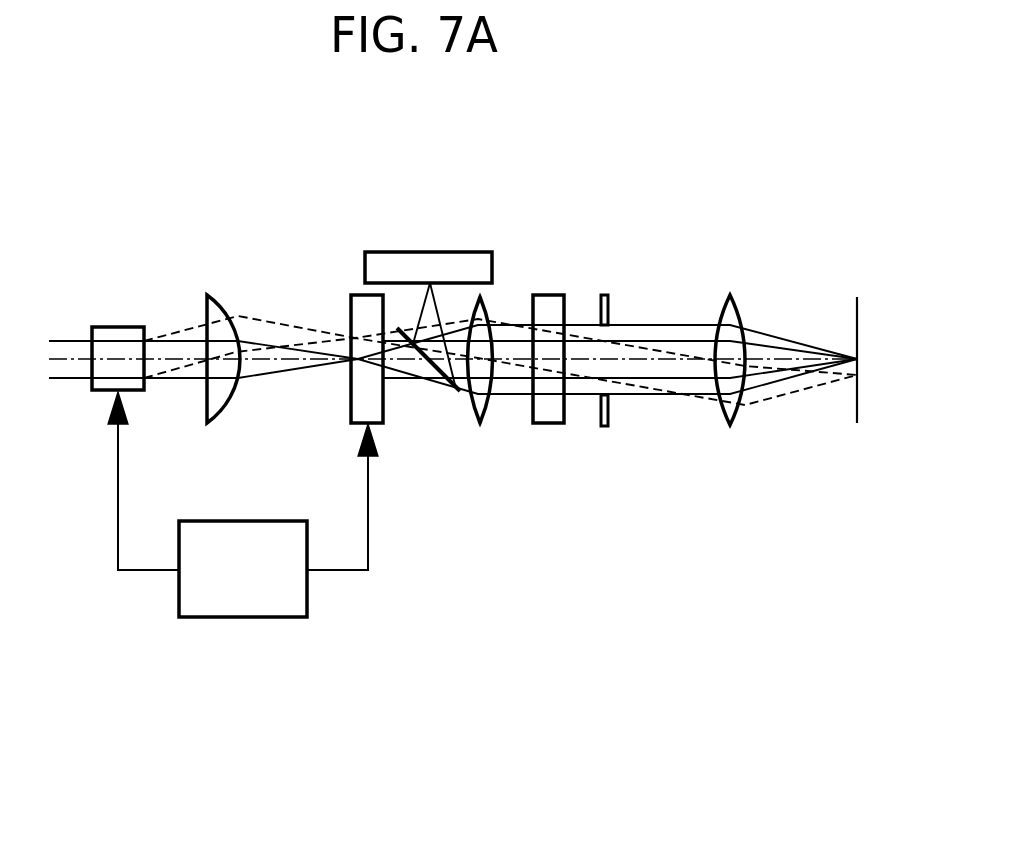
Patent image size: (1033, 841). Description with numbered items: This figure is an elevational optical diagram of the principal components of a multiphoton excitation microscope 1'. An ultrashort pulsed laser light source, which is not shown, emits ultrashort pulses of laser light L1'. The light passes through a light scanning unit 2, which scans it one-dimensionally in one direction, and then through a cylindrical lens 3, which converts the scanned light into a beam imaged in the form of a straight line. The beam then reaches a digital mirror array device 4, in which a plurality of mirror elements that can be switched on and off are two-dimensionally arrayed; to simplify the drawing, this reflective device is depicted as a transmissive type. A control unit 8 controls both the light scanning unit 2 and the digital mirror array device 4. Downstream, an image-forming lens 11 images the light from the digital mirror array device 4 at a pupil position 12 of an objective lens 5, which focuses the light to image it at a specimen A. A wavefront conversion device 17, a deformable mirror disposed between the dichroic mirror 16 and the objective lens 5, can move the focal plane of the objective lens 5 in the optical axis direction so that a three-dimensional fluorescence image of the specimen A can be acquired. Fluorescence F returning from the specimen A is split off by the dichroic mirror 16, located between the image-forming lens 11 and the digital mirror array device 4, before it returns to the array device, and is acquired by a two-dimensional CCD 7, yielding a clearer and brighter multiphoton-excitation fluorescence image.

The multiphoton excitation microscope 1' is at (679, 140).
The light scanning unit 2 is at (118, 326).
The cylindrical lens 3 is at (210, 295).
The digital mirror array device 4 is at (350, 305).
The objective lens 5 is at (732, 425).
The two-dimensional CCD camera 7 is at (445, 252).
The control unit 8 is at (260, 617).
The image-forming lens 11 is at (486, 415).
The pupil position 12 is at (606, 295).
The dichroic mirror 16 is at (444, 393).
The wavefront conversion device 17 is at (550, 295).
The specimen A is at (857, 312).
The fluorescence F is at (677, 324).
The ultrashort pulsed laser light L1' is at (301, 401).